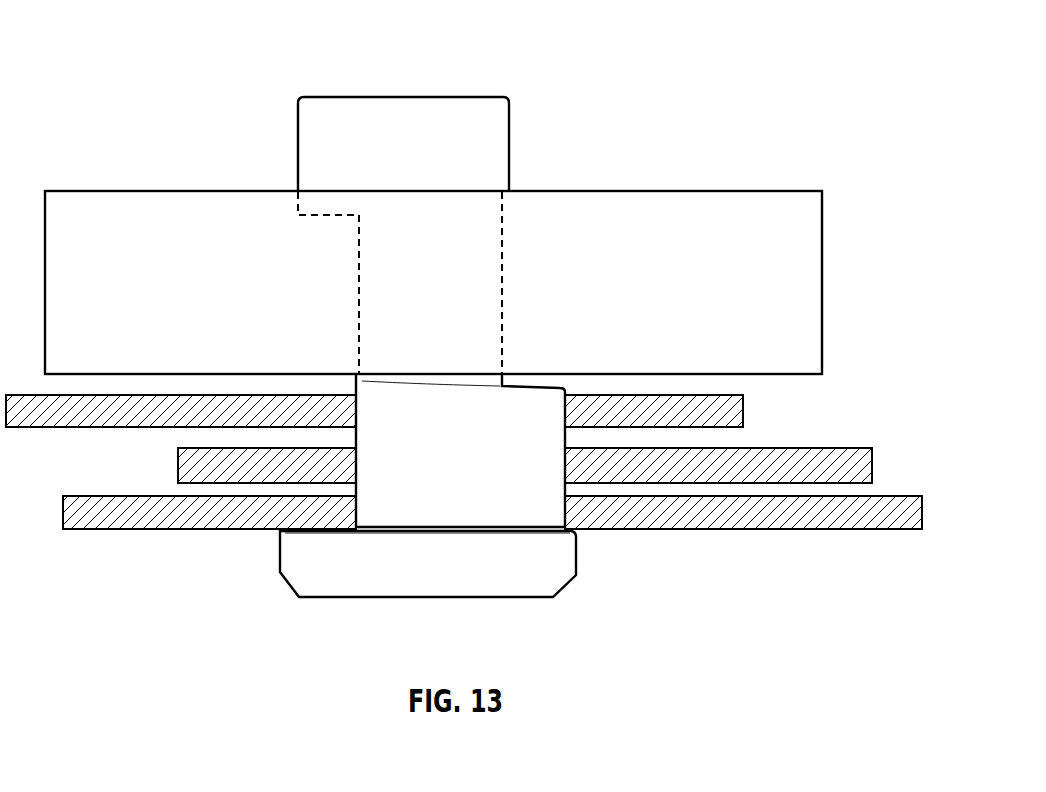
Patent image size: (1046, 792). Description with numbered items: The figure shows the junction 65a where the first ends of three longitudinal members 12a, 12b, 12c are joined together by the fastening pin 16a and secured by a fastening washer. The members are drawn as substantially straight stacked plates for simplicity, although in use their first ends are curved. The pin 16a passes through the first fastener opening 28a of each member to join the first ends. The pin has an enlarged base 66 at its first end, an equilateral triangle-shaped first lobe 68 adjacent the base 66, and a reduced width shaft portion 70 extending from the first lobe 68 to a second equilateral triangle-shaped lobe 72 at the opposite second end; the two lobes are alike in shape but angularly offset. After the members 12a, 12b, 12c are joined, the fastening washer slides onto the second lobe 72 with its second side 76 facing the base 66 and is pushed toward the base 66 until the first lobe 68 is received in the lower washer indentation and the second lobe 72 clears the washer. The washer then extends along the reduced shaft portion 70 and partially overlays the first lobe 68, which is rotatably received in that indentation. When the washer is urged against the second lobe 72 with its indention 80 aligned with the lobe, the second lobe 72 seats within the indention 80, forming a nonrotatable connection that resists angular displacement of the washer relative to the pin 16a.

The junction 65a is at (83, 103).
The fastening pin 16a is at (510, 123).
The second lobe 72 is at (297, 133).
The second side 76 is at (735, 190).
The reduced width shaft portion 70 is at (503, 222).
The first fastener opening 28a is at (822, 262).
The indention 80 is at (331, 214).
The longitudinal member 12c is at (37, 428).
The longitudinal member 12b is at (852, 448).
The longitudinal member 12a is at (107, 530).
The first lobe 68 is at (460, 450).
The base 66 is at (284, 574).